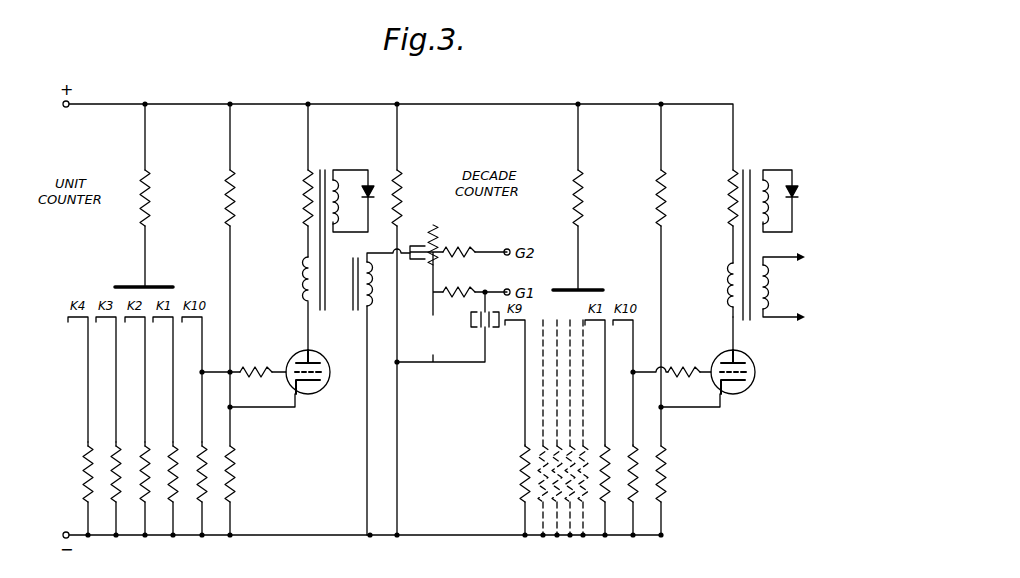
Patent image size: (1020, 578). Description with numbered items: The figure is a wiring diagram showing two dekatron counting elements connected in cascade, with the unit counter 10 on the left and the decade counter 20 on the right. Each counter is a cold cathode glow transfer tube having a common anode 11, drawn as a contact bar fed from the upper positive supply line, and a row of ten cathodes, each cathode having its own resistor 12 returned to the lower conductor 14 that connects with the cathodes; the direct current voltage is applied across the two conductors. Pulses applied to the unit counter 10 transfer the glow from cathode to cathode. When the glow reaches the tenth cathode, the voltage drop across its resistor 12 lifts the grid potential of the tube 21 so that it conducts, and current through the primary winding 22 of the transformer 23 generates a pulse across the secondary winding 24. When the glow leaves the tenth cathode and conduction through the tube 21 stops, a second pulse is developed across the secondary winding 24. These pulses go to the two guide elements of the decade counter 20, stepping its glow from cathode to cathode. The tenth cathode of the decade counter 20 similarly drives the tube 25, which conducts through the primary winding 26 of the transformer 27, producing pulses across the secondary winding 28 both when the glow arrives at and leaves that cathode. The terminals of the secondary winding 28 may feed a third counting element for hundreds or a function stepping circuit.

The unit counter 10 is at (186, 100).
The decade counter 20 is at (634, 100).
The common anode 11 is at (122, 284).
The resistor 12 is at (242, 477).
The conductor 14 is at (322, 535).
The tube 21 is at (311, 400).
The primary winding 22 is at (301, 278).
The transformer 23 is at (341, 292).
The secondary winding 24 is at (350, 311).
The tube 25 is at (737, 400).
The primary winding 26 is at (726, 290).
The transformer 27 is at (748, 322).
The secondary winding 28 is at (771, 297).